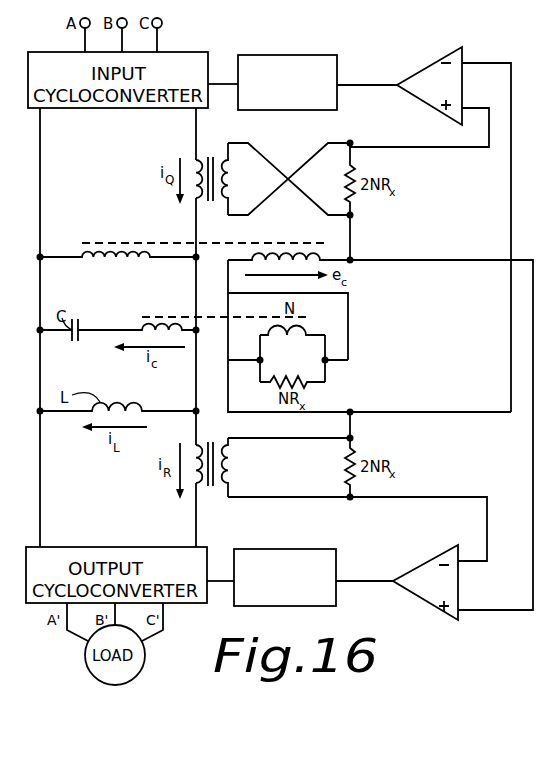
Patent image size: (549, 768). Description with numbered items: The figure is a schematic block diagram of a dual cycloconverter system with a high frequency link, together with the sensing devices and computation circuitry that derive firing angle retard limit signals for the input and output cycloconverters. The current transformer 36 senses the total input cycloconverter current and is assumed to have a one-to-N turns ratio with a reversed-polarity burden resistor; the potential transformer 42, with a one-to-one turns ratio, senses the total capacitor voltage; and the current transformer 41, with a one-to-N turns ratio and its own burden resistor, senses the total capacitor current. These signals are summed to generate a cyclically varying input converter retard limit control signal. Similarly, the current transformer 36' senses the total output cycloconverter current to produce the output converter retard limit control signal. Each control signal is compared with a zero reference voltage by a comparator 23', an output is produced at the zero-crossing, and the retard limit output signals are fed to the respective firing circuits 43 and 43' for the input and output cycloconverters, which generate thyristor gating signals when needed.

The current transformer 36 is at (221, 168).
The current transformer 36' is at (221, 486).
The current transformer 41 is at (142, 326).
The potential transformer 42 is at (110, 264).
The firing circuit 43 is at (287, 69).
The firing circuit 43' is at (285, 565).
The comparator amplifier 23' is at (427, 324).